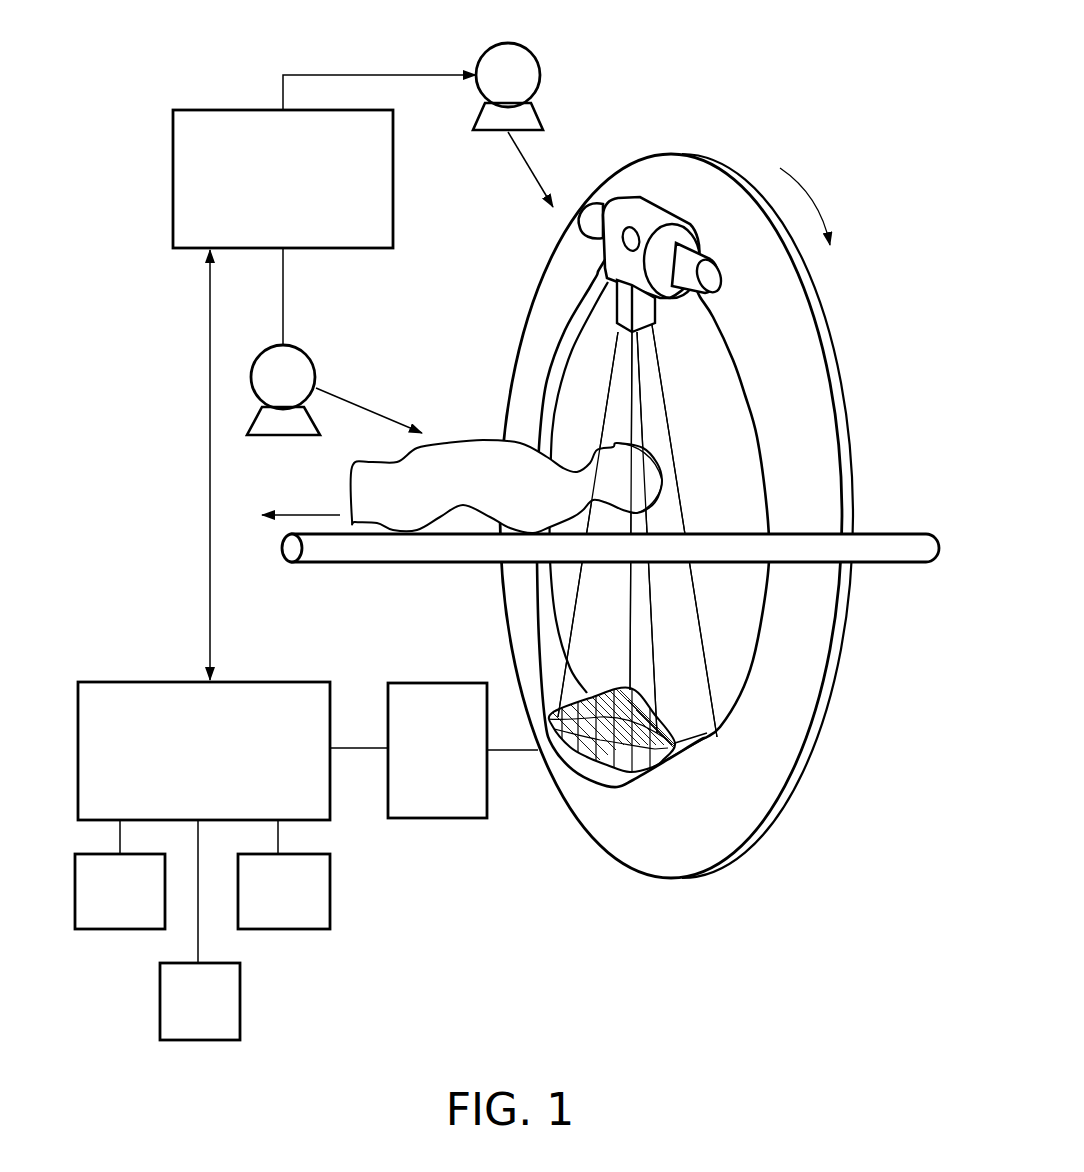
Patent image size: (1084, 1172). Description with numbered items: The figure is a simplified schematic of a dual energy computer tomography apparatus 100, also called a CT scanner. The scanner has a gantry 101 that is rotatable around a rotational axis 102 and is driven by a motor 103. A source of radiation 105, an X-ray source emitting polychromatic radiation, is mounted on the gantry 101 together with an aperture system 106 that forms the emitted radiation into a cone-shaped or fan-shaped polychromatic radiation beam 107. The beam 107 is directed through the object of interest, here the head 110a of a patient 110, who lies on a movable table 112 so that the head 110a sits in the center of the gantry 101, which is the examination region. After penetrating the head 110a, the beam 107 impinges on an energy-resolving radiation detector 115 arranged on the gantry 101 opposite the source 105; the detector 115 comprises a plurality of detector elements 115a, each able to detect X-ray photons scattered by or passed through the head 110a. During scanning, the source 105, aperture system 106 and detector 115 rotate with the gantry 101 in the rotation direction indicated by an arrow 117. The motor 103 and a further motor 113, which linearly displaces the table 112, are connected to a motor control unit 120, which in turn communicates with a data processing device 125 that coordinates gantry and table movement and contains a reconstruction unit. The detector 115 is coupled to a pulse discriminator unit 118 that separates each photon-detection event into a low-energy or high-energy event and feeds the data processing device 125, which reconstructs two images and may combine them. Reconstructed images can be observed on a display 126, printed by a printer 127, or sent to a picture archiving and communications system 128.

The computer tomography apparatus 100 is at (793, 78).
The gantry 101 is at (815, 669).
The rotational axis 102 is at (308, 514).
The motor 103 is at (541, 72).
The source of radiation 105 is at (655, 212).
The aperture system 106 is at (623, 303).
The polychromatic radiation beam 107 is at (670, 423).
The patient 110 is at (455, 450).
The head 110a is at (665, 482).
The movable table 112 is at (907, 540).
The motor 113 is at (316, 372).
The radiation detector 115 is at (590, 784).
The detector elements 115a is at (590, 690).
The arrow 117 is at (814, 197).
The pulse discriminator unit 118 is at (432, 682).
The motor control unit 120 is at (222, 108).
The data processing device 125 is at (256, 681).
The display 126 is at (113, 930).
The printer 127 is at (243, 1003).
The picture archiving and communications system 128 is at (330, 893).